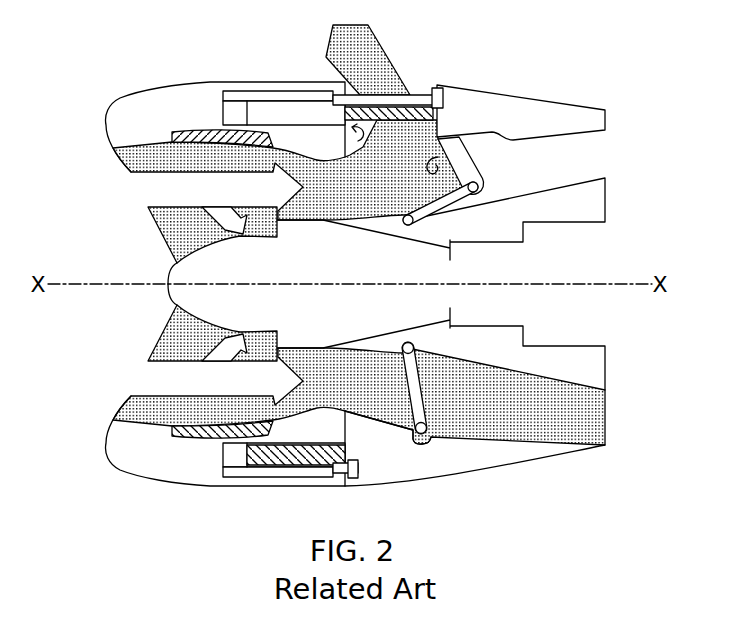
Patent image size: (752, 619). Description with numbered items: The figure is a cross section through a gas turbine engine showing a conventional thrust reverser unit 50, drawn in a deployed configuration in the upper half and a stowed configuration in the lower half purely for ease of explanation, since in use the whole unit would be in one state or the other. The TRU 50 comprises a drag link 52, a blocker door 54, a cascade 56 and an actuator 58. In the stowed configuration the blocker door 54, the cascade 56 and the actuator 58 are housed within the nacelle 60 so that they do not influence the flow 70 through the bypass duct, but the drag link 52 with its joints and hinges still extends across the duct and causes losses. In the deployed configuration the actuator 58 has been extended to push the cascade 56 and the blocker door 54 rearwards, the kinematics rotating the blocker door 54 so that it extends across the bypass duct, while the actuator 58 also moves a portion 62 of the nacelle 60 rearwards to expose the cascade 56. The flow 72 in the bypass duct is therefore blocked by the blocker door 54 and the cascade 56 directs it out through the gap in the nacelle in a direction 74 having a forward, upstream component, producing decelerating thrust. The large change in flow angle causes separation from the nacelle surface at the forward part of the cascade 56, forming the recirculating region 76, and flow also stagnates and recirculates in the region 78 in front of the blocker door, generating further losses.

The thrust reverser unit (TRU) 50 is at (415, 60).
The drag link 52 is at (447, 201).
The blocker door 54 is at (462, 160).
The cascade 56 is at (419, 107).
The actuator 58 is at (290, 97).
The nacelle 60 is at (148, 463).
The portion of the nacelle 62 is at (578, 115).
The flow through the bypass duct (stowed) 70 is at (160, 383).
The flow in the bypass duct (deployed) 72 is at (157, 193).
The direction of flow out of the cascade 74 is at (331, 50).
The recirculating region 76 is at (358, 133).
The stagnation region in front of the blocker door 78 is at (432, 165).